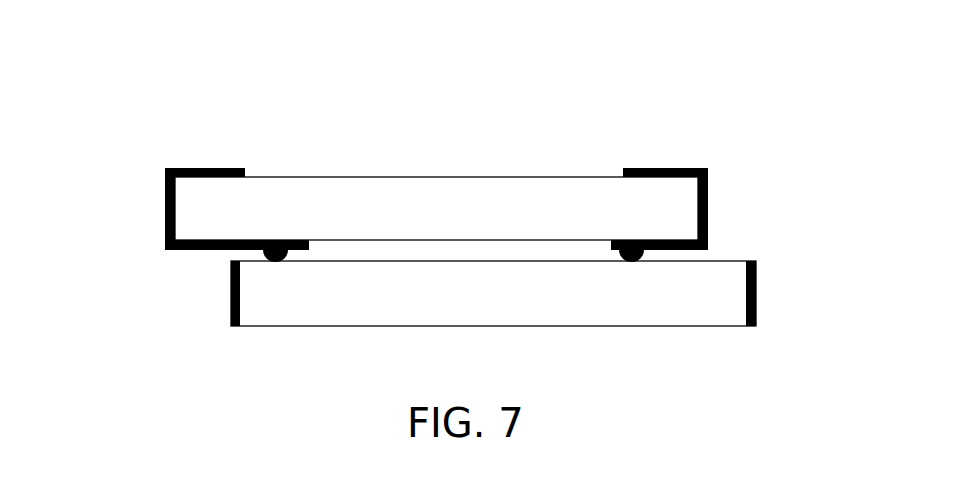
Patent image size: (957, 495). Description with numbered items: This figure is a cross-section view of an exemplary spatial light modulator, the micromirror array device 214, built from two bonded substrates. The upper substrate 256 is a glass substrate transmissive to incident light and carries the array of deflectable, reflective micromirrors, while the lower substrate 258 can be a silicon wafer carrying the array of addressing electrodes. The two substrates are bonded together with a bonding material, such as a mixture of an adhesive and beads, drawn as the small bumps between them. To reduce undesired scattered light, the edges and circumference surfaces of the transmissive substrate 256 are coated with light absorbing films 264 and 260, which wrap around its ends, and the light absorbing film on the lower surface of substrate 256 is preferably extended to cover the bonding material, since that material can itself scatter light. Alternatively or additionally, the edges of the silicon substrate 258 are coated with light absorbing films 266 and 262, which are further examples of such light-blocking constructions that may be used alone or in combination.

The micromirror array device 214 is at (511, 166).
The top substrate 256 is at (322, 190).
The bottom substrate 258 is at (488, 312).
The light absorbing film 260 is at (708, 210).
The light absorbing film 262 is at (758, 295).
The light absorbing film 264 is at (162, 213).
The light absorbing film 266 is at (227, 313).